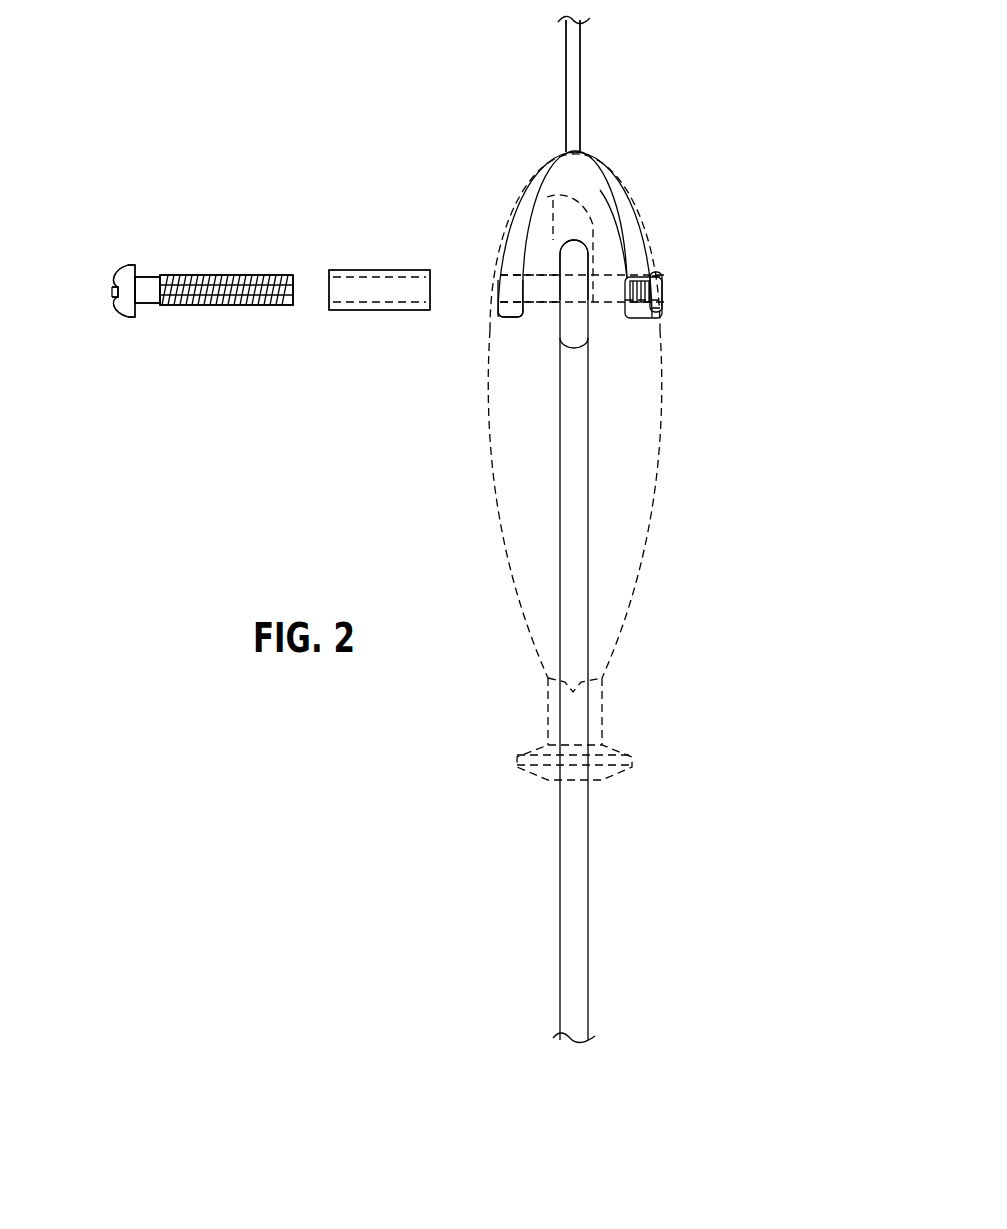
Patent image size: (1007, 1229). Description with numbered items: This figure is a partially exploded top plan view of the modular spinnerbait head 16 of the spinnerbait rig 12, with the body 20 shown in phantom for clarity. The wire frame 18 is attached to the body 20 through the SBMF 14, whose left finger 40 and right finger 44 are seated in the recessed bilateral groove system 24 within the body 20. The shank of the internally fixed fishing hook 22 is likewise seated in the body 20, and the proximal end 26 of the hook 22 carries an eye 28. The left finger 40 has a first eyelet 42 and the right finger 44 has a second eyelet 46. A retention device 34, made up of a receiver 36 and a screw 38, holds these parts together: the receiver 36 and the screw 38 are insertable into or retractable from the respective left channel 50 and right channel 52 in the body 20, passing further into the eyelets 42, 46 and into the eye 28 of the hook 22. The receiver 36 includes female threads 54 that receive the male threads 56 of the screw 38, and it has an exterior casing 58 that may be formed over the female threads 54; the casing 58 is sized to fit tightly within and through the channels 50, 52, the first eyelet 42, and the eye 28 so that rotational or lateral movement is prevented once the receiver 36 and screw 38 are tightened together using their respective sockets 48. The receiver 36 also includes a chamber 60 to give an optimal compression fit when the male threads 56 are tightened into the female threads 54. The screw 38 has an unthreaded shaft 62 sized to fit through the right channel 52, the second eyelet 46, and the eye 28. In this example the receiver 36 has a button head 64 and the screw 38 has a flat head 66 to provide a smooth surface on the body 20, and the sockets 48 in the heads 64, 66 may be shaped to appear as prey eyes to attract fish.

The spinnerbait rig 12 is at (470, 99).
The SBMF 14 is at (608, 183).
The modular spinnerbait head 16 is at (384, 149).
The wire frame 18 is at (580, 47).
The body 20 is at (638, 612).
The fishing hook 22 is at (575, 974).
The recessed bilateral groove system 24 is at (597, 280).
The proximal end 26 is at (572, 255).
The eye 28 is at (557, 302).
The retention device 34 is at (241, 163).
The receiver 36 is at (660, 278).
The screw 38 is at (181, 243).
The left finger 40 is at (633, 237).
The first eyelet 42 is at (620, 315).
The right finger 44 is at (512, 265).
The second eyelet 46 is at (533, 312).
The sockets 48 is at (110, 288).
The left channel 50 is at (625, 312).
The right channel 52 is at (497, 312).
The female threads 54 is at (620, 294).
The male threads 56 is at (238, 306).
The casing 58 is at (345, 268).
The chamber 60 is at (335, 300).
The unthreaded shaft 62 is at (143, 293).
The button head 64 is at (128, 270).
The flat head 66 is at (118, 318).